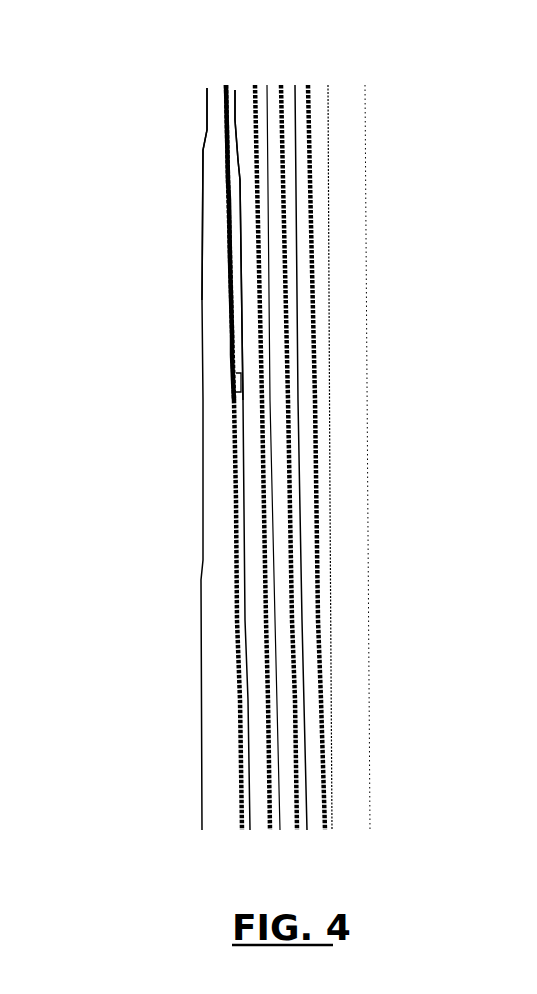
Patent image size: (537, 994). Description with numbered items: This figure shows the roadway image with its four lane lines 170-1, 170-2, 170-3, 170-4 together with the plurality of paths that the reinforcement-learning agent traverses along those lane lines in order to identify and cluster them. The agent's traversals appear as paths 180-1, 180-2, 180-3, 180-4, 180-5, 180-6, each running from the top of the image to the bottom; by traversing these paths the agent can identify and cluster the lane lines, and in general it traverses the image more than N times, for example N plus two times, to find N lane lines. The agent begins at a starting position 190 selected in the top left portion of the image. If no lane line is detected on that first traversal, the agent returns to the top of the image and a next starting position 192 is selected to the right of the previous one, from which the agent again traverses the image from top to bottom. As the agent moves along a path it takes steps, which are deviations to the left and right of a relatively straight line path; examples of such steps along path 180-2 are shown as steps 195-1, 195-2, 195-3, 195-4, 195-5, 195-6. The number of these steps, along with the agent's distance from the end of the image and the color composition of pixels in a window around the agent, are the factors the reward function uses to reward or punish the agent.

The starting position 190 is at (197, 76).
The next starting position 192 is at (239, 76).
The step 195-1 is at (233, 187).
The step 195-2 is at (232, 213).
The step 195-3 is at (233, 327).
The step 195-4 is at (232, 342).
The step 195-5 is at (232, 368).
The step 195-6 is at (233, 391).
The path 180-1 is at (203, 633).
The path 180-2 is at (241, 500).
The path 180-3 is at (277, 592).
The path 180-4 is at (305, 545).
The path 180-5 is at (326, 531).
The path 180-6 is at (365, 573).
The lane line 170-1 is at (238, 670).
The lane line 170-2 is at (267, 698).
The lane line 170-3 is at (295, 727).
The lane line 170-4 is at (322, 758).